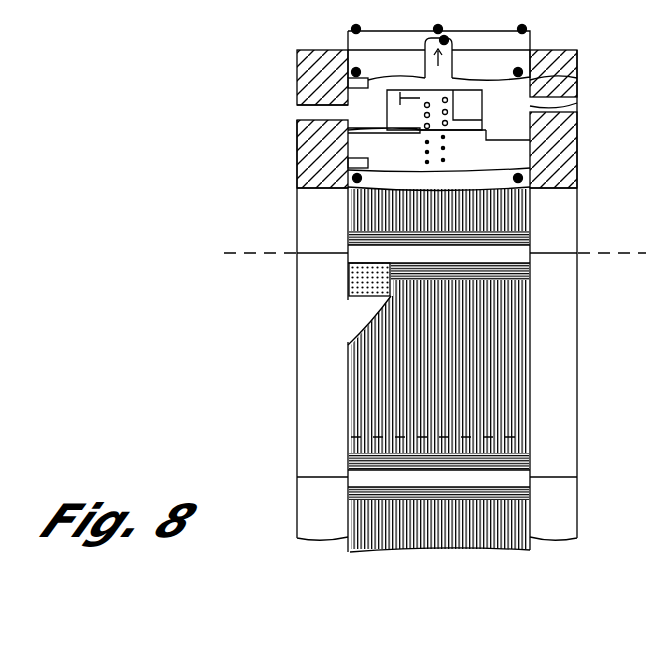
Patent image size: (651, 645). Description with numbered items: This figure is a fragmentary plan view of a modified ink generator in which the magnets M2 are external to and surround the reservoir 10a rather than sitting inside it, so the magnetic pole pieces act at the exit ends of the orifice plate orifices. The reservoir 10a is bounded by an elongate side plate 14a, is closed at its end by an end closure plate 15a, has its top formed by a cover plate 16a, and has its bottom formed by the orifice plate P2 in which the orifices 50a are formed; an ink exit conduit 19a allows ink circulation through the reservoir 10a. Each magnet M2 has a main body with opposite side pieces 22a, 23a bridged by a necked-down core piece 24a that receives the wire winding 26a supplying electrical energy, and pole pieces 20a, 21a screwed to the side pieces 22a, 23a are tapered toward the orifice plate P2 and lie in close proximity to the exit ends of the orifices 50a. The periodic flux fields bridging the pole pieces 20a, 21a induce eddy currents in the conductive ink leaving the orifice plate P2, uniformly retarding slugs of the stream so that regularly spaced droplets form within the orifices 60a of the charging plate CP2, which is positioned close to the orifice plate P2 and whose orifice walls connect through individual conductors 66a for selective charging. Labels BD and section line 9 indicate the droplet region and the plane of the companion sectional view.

The reservoir 10a is at (346, 78).
The side plate 14a is at (577, 70).
The end closure plate 15a is at (531, 39).
The ink exit conduit 19a is at (447, 39).
The pole piece 20a is at (352, 128).
The pole piece 21a is at (578, 123).
The side piece 22a is at (297, 104).
The side piece 23a is at (577, 94).
The core piece 24a is at (364, 319).
The winding 26a is at (503, 212).
The orifices 50a is at (434, 140).
The orifices 60a is at (398, 113).
The conductors 66a is at (458, 97).
The cover plate 16a is at (467, 177).
The orifice plate P2 is at (512, 151).
The magnets M2 is at (579, 163).
The section line 9- 9 is at (232, 255).
The element BD is at (418, 4).
The charging plate CP2 is at (526, 4).